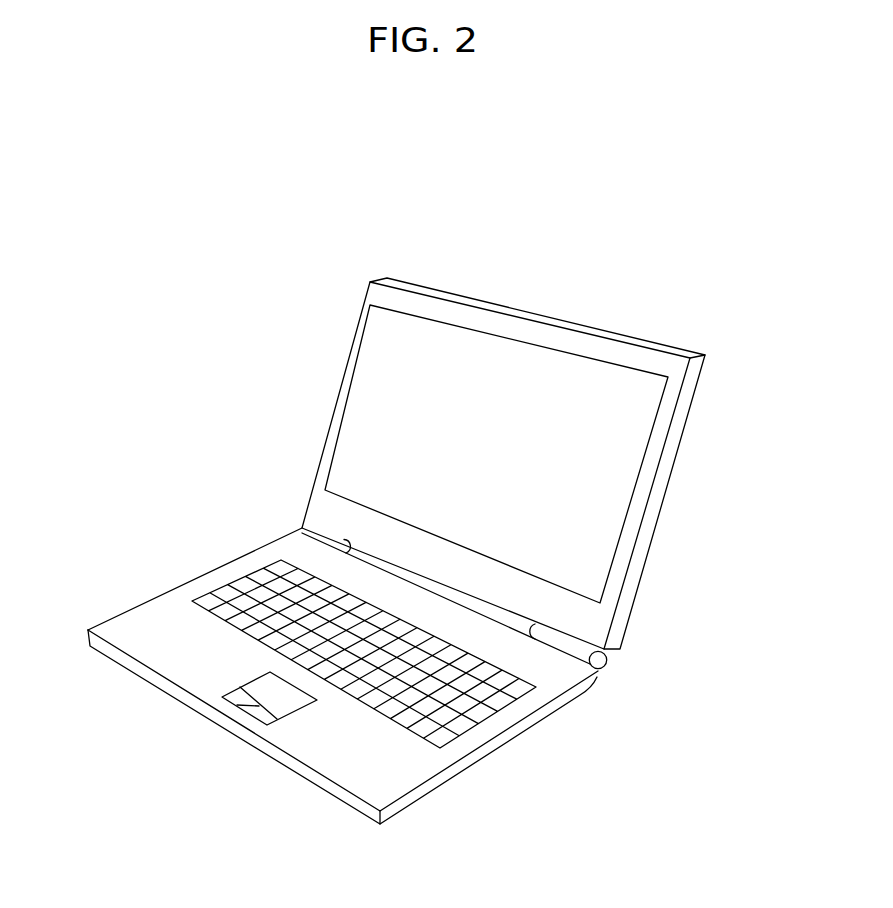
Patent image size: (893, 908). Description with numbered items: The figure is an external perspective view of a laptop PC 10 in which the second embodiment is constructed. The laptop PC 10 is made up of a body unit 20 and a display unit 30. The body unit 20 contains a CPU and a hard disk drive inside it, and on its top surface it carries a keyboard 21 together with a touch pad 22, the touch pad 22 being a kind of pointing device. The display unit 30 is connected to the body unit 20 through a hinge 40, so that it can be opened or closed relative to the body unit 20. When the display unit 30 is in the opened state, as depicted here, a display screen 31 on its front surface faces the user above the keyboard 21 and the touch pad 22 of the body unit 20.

The laptop PC 10 is at (181, 407).
The body unit 20 is at (156, 575).
The keyboard 21 is at (274, 581).
The touch pad 22 is at (260, 693).
The display unit 30 is at (326, 291).
The display screen 31 is at (633, 400).
The hinge 40 is at (577, 632).